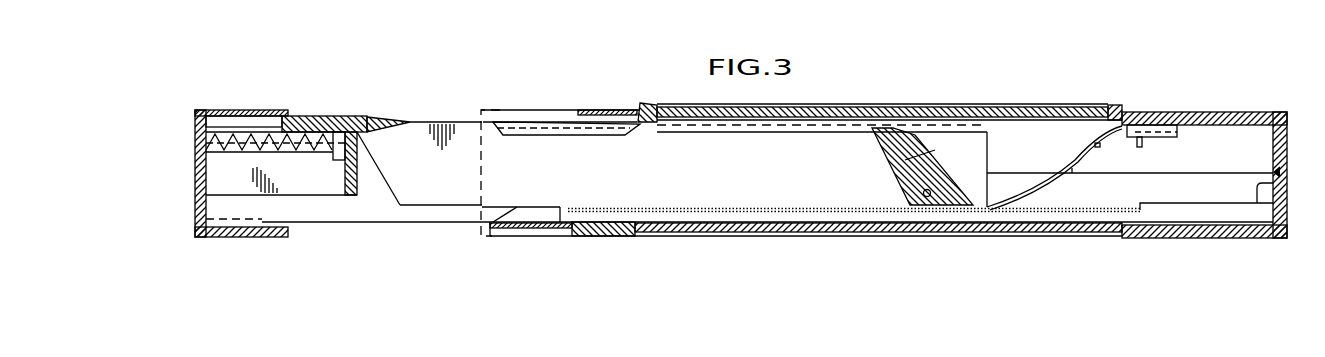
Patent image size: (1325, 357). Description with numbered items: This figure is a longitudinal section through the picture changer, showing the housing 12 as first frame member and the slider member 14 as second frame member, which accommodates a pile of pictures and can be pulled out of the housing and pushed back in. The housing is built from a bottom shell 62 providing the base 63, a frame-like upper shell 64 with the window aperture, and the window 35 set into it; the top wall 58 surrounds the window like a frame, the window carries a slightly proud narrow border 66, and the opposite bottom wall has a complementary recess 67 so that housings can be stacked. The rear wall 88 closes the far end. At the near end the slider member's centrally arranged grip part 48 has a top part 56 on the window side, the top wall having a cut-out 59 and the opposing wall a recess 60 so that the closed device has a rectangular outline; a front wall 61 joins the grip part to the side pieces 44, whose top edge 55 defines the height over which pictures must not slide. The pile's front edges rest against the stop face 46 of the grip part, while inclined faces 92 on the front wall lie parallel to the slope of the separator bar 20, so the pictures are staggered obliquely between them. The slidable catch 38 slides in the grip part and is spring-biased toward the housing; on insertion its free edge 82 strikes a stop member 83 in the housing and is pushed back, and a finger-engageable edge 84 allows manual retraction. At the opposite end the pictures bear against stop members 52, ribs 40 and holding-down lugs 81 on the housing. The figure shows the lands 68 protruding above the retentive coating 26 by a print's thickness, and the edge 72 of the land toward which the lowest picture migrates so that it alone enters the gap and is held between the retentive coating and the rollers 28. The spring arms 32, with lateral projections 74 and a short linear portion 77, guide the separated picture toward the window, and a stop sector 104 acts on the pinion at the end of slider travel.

The housing 12 is at (1212, 110).
The slider member 14 is at (328, 232).
The separator bar 20 is at (930, 152).
The retentive coating 26 is at (743, 208).
The rollers 28 is at (897, 183).
The spring arms 32 is at (1040, 198).
The window 35 is at (892, 107).
The slidable catch 38 is at (322, 116).
The ribs 40 is at (1150, 128).
The side pieces 44 is at (438, 122).
The stop face 46 is at (360, 178).
The grip part 48 is at (218, 110).
The stop members 52 is at (1136, 148).
The top edge 55 is at (482, 112).
The top part 56 is at (262, 116).
The top wall 58 is at (1245, 112).
The cut-out 59 is at (556, 112).
The recess 60 is at (545, 232).
The front wall 61 is at (196, 178).
The bottom shell 62 is at (1213, 238).
The base 63 is at (760, 236).
The upper shell 64 is at (1168, 112).
The border 66 is at (650, 103).
The recess 67 is at (898, 234).
The lands 68 is at (1200, 203).
The edge 72 is at (1140, 205).
The projections 74 is at (1080, 176).
The linear portion 77 is at (1110, 106).
The holding-down lugs 81 is at (562, 137).
The free edge 82 is at (415, 122).
The stop member 83 is at (634, 114).
The finger-engageable edge 84 is at (372, 117).
The rear wall 88 is at (1288, 136).
The inclined faces 92 is at (380, 170).
The stop sector 104 is at (1253, 190).